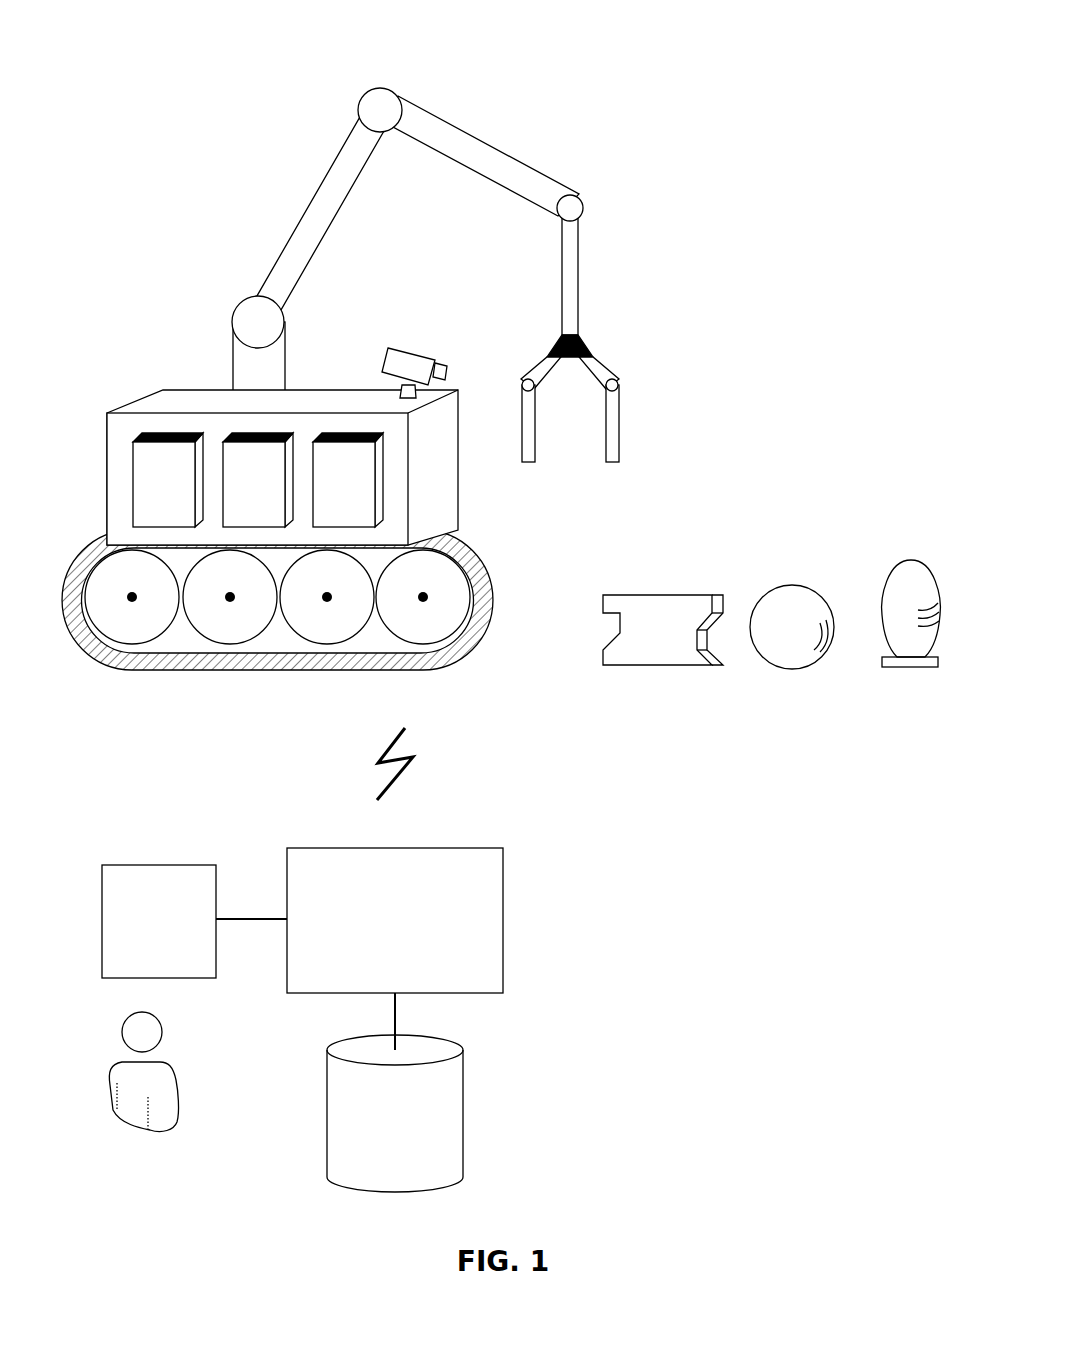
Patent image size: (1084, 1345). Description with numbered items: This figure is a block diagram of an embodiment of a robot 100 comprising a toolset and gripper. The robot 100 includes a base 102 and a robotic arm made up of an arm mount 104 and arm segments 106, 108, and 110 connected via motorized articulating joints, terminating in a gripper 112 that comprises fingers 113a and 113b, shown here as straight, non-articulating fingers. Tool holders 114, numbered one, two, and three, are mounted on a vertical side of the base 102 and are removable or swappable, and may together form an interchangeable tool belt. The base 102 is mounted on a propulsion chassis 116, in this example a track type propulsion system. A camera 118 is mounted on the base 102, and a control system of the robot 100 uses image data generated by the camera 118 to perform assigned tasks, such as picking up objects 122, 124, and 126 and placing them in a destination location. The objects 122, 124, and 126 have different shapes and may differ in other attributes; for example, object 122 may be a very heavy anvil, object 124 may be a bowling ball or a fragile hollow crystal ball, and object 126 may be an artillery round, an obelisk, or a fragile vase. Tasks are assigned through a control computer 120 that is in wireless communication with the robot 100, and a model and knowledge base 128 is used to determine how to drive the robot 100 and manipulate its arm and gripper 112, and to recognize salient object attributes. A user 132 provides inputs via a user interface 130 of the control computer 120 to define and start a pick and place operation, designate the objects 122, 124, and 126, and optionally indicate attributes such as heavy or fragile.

The robot 100 is at (172, 50).
The base 102 is at (163, 397).
The arm mount 104 is at (285, 352).
The arm segment 106 is at (297, 224).
The arm segment 108 is at (500, 150).
The arm segment 110 is at (580, 268).
The gripper 112 is at (608, 372).
The finger 113a is at (537, 448).
The finger 113b is at (622, 418).
The tool holders 114 is at (131, 482).
The propulsion chassis 116 is at (475, 552).
The camera 118 is at (408, 348).
The control computer 120 is at (506, 900).
The object 122 is at (670, 592).
The object 124 is at (797, 598).
The object 126 is at (913, 575).
The model and knowledge base 128 is at (465, 1088).
The user interface 130 is at (167, 863).
The user 132 is at (162, 1132).